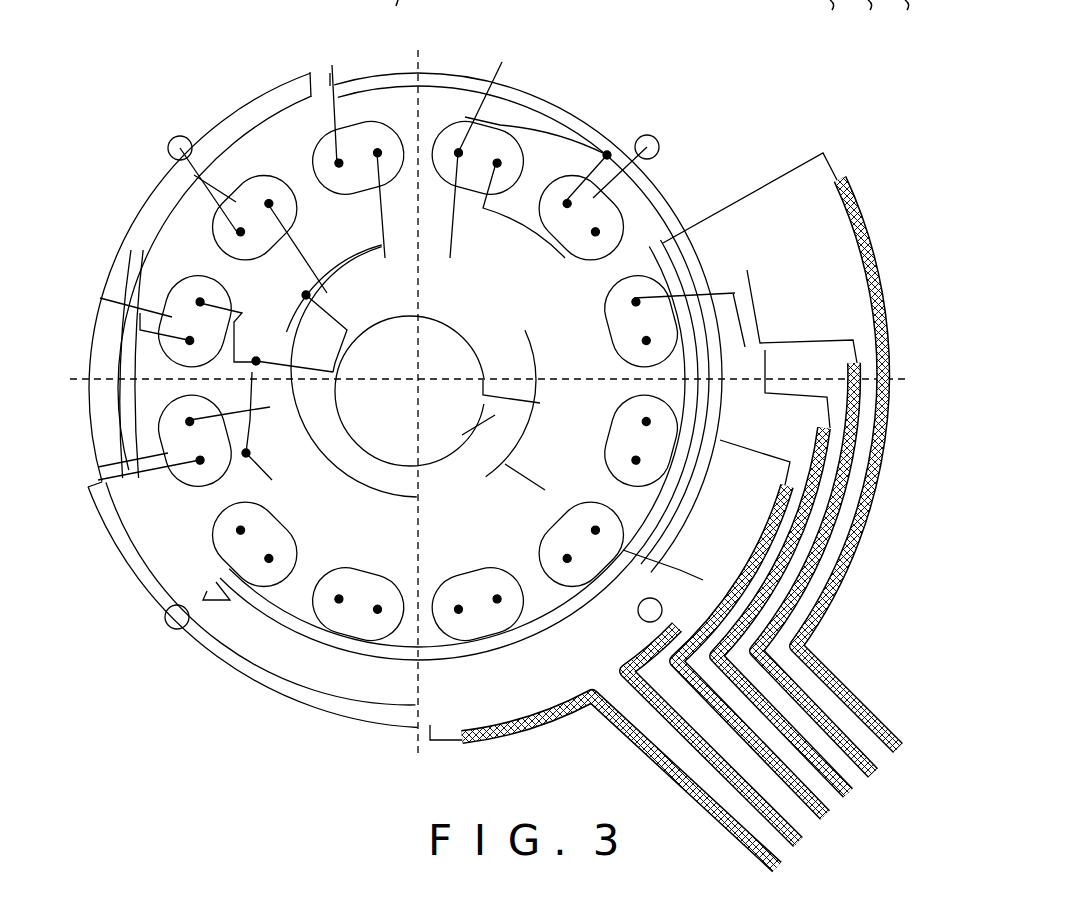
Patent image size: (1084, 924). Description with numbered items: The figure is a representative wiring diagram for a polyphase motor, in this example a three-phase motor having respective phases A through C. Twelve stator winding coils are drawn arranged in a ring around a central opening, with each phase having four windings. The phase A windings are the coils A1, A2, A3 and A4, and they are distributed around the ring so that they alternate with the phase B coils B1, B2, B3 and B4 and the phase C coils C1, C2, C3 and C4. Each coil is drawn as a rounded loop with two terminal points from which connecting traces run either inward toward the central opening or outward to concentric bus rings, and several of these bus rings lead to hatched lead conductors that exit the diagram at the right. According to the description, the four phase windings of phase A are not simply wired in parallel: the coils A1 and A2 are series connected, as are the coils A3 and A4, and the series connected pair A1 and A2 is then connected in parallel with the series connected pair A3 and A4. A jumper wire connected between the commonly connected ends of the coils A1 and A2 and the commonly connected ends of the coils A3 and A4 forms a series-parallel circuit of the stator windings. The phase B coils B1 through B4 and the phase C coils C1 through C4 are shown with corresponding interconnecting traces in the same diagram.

The phase A winding coil A1 is at (478, 158).
The phase B winding coil B1 is at (581, 218).
The phase C winding coil C1 is at (641, 321).
The phase A winding coil A2 is at (641, 441).
The phase B winding coil B2 is at (581, 544).
The phase C winding coil C2 is at (478, 604).
The phase A winding coil A3 is at (358, 604).
The phase B winding coil B3 is at (255, 544).
The phase C winding coil C3 is at (195, 441).
The phase A winding coil A4 is at (195, 321).
The phase B winding coil B4 is at (255, 218).
The phase C winding coil C4 is at (358, 158).